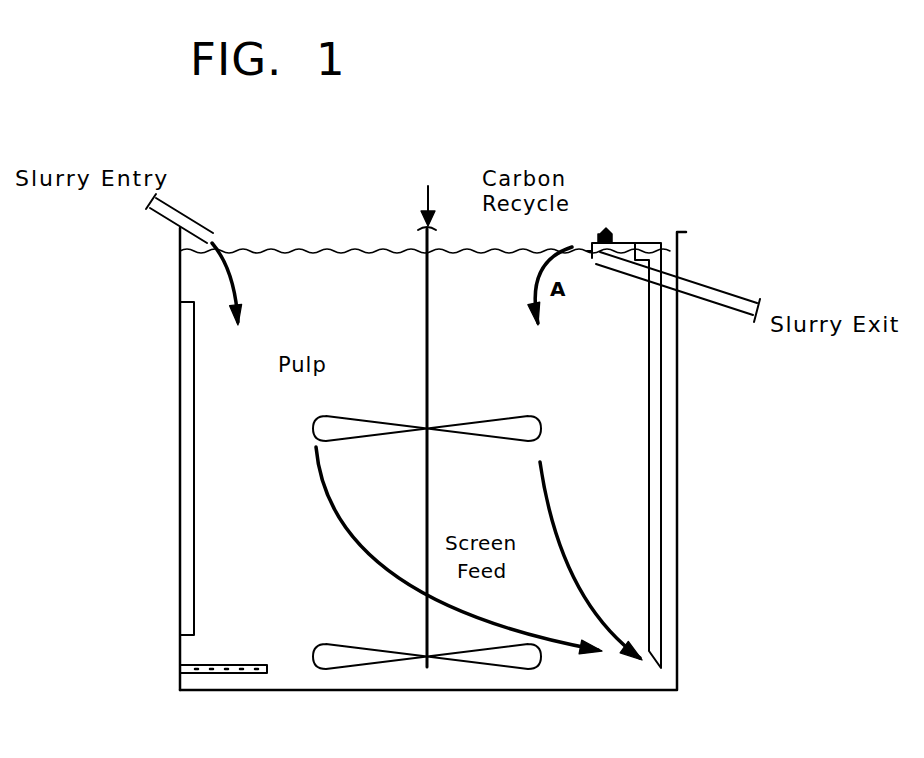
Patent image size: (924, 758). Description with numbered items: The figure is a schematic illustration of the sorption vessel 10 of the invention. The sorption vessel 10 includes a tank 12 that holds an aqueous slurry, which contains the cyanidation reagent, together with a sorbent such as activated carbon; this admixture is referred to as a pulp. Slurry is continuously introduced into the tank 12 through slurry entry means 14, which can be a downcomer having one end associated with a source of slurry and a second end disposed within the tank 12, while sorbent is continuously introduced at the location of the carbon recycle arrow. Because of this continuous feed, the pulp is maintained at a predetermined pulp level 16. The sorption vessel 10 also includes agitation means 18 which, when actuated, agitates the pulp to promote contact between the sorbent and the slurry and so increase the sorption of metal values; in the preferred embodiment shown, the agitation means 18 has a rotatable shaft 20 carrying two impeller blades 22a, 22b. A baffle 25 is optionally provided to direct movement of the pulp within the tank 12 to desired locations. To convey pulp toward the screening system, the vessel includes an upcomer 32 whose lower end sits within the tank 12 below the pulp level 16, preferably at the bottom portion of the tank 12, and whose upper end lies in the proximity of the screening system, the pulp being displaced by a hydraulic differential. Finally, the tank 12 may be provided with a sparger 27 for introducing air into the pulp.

The sorption vessel 10 is at (410, 724).
The tank 12 is at (180, 368).
The slurry entry means 14 is at (176, 213).
The pulp level 16 is at (300, 245).
The agitation means 18 is at (430, 192).
The rotatable shaft 20 is at (428, 362).
The impeller blade 22a is at (541, 418).
The impeller blade 22b is at (541, 660).
The baffle 25 is at (193, 445).
The sparger 27 is at (180, 668).
The upcomer 32 is at (650, 361).